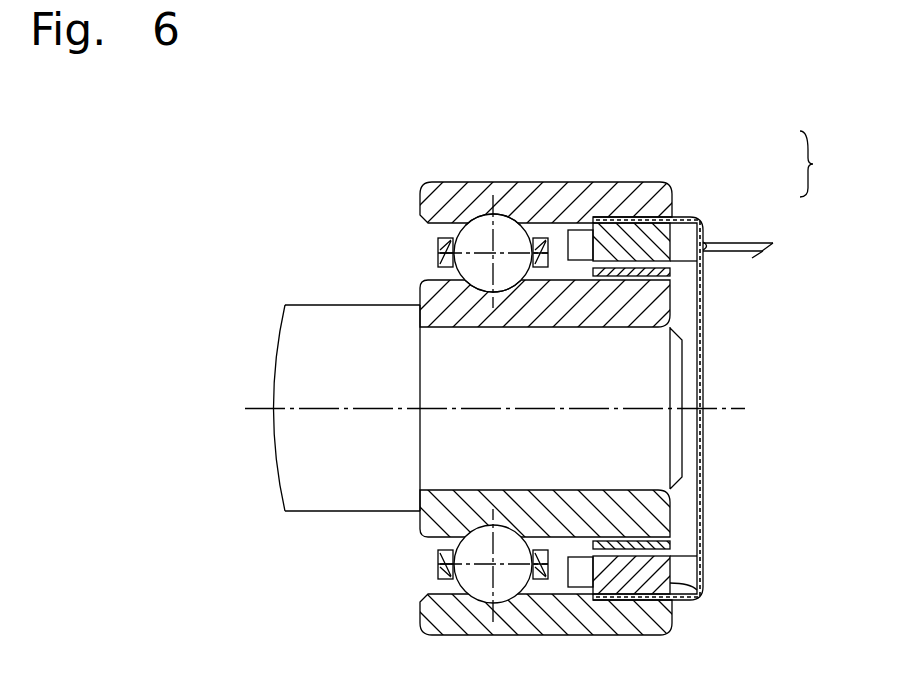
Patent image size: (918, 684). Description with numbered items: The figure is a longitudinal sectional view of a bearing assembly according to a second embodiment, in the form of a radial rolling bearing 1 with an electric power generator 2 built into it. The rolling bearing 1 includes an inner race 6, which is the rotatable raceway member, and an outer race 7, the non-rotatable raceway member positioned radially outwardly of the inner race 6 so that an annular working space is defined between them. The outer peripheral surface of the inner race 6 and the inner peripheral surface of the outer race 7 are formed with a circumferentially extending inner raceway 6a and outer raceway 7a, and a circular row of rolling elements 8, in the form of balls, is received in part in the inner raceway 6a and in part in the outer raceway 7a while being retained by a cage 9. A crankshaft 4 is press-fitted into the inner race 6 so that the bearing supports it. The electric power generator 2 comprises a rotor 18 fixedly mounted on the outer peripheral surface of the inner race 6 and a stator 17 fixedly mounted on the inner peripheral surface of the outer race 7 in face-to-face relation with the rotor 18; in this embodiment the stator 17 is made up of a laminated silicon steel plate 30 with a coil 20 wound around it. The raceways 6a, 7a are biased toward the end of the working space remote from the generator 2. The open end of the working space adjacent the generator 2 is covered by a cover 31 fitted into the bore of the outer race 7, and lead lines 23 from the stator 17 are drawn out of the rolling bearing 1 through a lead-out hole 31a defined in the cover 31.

The rolling bearing 1 is at (383, 161).
The electric power generator 2 is at (817, 164).
The crankshaft 4 is at (343, 497).
The inner race 6 is at (428, 292).
The inner raceway 6a is at (485, 283).
The outer race 7 is at (420, 208).
The outer raceway 7a is at (512, 214).
The rolling element 8 is at (478, 228).
The cage 9 is at (438, 243).
The stator 17 is at (669, 220).
The rotor 18 is at (668, 277).
The coil 20 is at (580, 235).
The lead lines 23 is at (757, 254).
The laminated silicon steel plate 30 is at (625, 232).
The cover 31 is at (705, 440).
The lead-out hole 31a is at (705, 243).